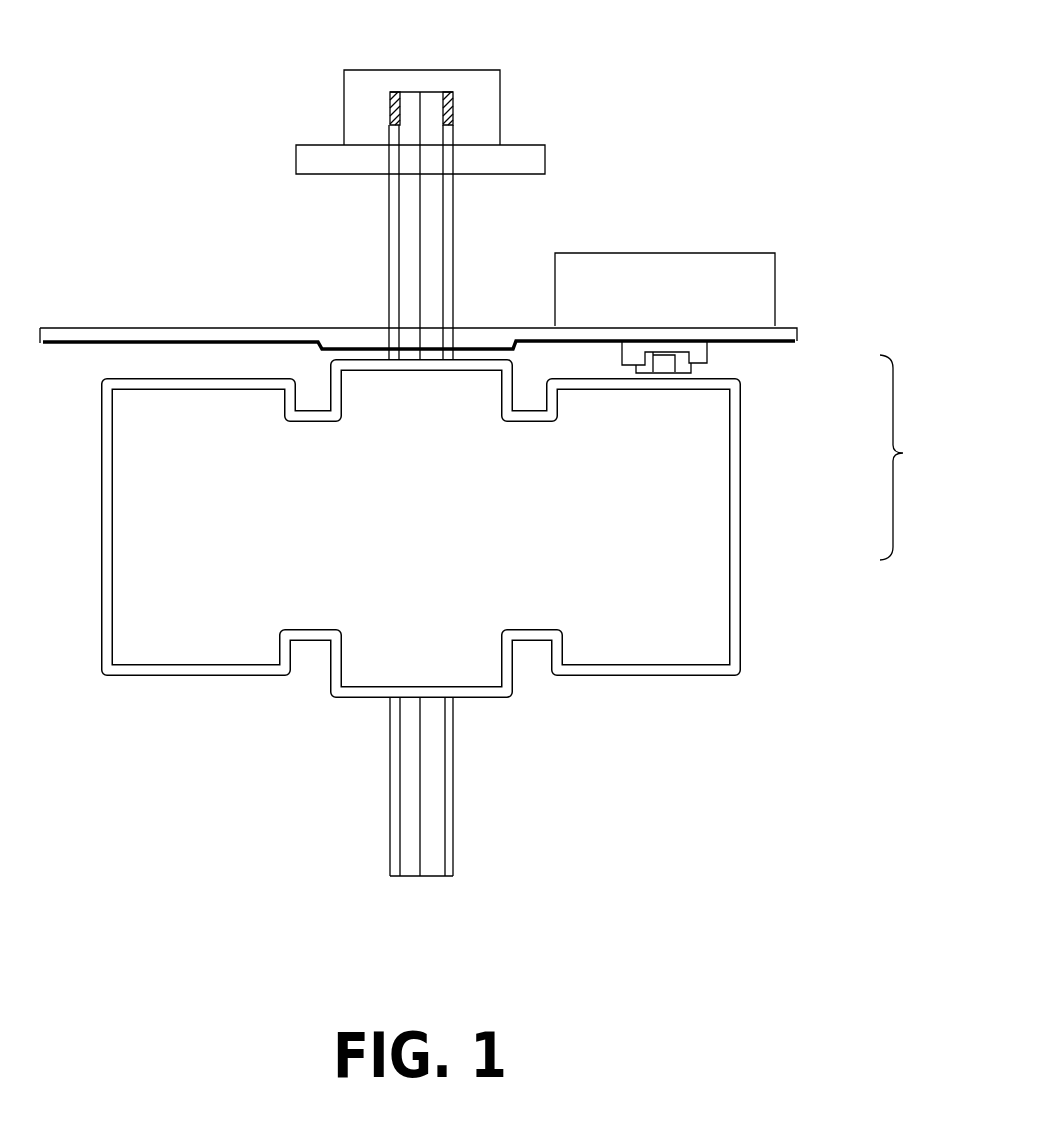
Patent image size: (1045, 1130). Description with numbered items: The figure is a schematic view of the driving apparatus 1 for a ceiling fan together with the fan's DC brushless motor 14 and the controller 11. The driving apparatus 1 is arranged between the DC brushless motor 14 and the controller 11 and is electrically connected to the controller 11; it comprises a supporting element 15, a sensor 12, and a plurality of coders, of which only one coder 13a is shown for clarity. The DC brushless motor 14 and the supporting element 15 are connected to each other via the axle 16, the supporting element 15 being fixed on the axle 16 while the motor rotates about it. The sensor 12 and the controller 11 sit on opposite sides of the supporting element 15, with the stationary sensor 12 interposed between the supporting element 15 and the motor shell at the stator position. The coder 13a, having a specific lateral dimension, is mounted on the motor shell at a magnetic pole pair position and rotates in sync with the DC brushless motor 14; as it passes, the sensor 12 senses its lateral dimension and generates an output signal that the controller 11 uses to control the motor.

The driving apparatus 1 is at (913, 457).
The controller 11 is at (640, 287).
The sensor 12 is at (693, 355).
The coder 13a is at (665, 367).
The DC brushless motor 14 is at (744, 620).
The supporting element 15 is at (790, 341).
The axle 16 is at (423, 128).